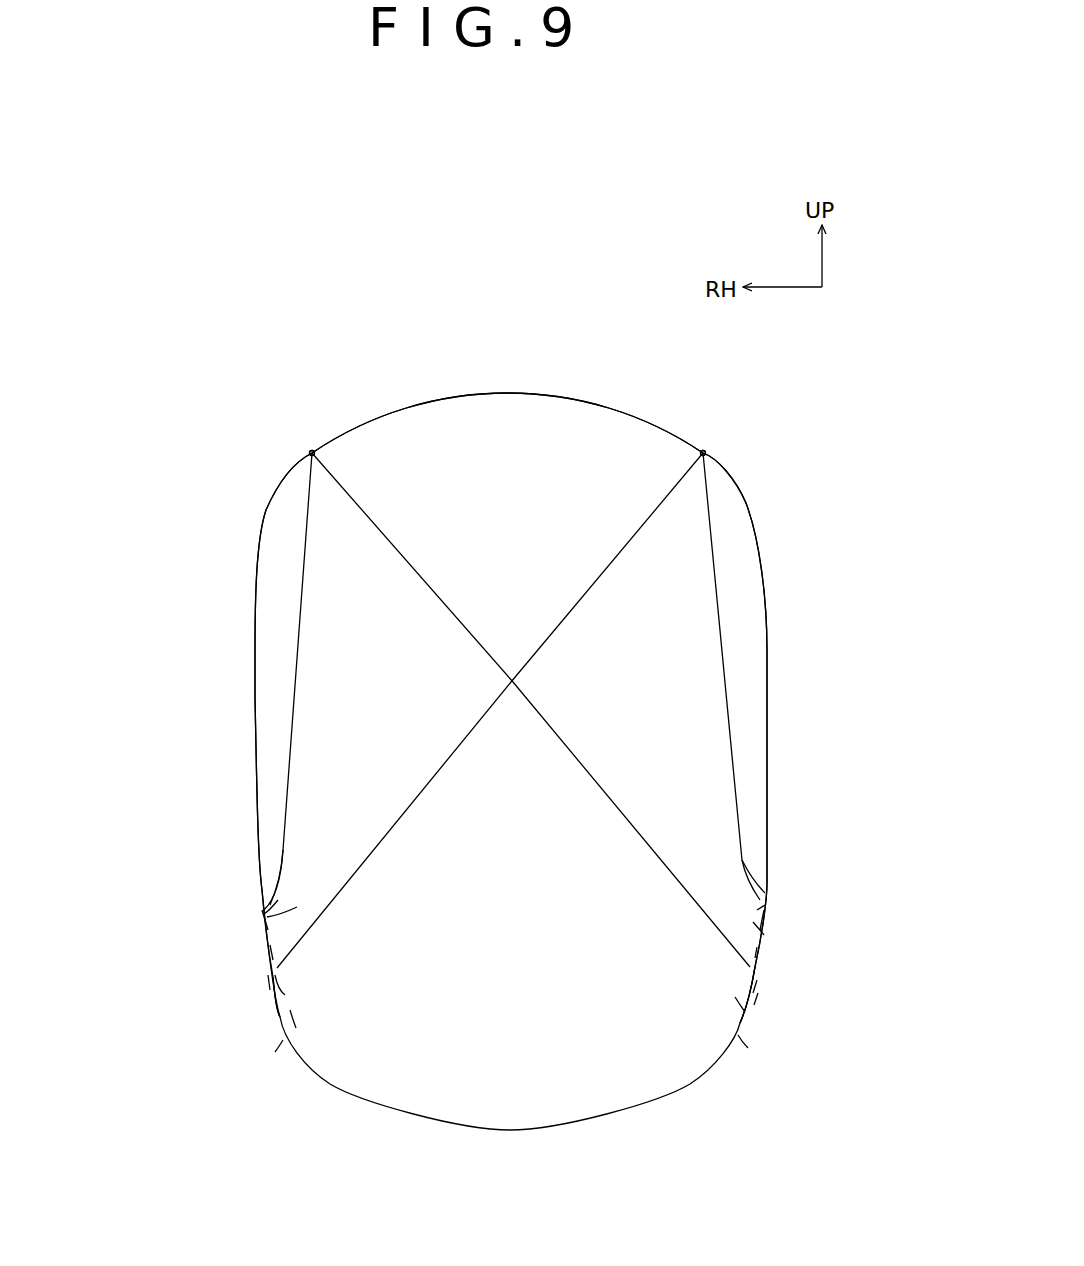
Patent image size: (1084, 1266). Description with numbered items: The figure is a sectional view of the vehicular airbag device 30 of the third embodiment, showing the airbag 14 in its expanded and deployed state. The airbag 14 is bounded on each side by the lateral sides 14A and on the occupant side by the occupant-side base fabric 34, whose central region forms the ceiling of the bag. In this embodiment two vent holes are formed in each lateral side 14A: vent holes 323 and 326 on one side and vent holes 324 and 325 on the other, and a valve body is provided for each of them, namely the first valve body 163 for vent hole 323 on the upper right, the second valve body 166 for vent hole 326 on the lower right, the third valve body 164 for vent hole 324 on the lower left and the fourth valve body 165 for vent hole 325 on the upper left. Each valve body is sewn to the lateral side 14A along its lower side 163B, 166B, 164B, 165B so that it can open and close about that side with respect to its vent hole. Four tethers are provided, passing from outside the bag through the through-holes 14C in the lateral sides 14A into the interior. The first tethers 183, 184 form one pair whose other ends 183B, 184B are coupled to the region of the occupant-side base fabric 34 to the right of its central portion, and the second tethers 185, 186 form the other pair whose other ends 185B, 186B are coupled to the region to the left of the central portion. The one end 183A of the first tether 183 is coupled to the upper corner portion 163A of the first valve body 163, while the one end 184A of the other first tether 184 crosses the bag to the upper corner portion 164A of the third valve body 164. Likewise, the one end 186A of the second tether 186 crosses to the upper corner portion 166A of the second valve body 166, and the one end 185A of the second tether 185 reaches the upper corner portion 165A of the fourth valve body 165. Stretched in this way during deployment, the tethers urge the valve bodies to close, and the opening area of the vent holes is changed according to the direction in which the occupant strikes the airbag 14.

The vehicular airbag device 30 is at (352, 377).
The airbag 14 is at (632, 410).
The occupant-side base fabric 34 is at (482, 392).
The lateral sides 14A is at (766, 655).
The through-holes 14C is at (268, 960).
The other end of first tether 183B is at (312, 453).
The other end of first tether 184B is at (312, 453).
The other end of second tether 185B is at (760, 418).
The other end of second tether 186B is at (703, 453).
The first tether 183 is at (300, 690).
The first tether 184 is at (412, 560).
The second tether 185 is at (720, 667).
The second tether 186 is at (607, 560).
The upper corner portion of first valve body 163A is at (278, 900).
The vent hole 323 is at (297, 907).
The one end of first tether 183A is at (257, 900).
The first valve body 163 is at (258, 920).
The lower side of first valve body 163B is at (273, 950).
The one end of second tether 186A is at (270, 985).
The second valve body 166 is at (273, 1023).
The lower side of second valve body 166B is at (287, 1037).
The upper corner portion of second valve body 166A is at (280, 997).
The vent hole 326 is at (290, 1010).
The upper corner portion of fourth valve body 165A is at (757, 910).
The one end of second tether 185A is at (777, 903).
The fourth valve body 165 is at (768, 922).
The lower side of fourth valve body 165B is at (757, 947).
The vent hole 325 is at (753, 922).
The upper corner portion of third valve body 164A is at (753, 993).
The one end of first tether 184A is at (758, 993).
The third valve body 164 is at (742, 1025).
The vent hole 324 is at (735, 997).
The lower side of third valve body 164B is at (738, 1035).